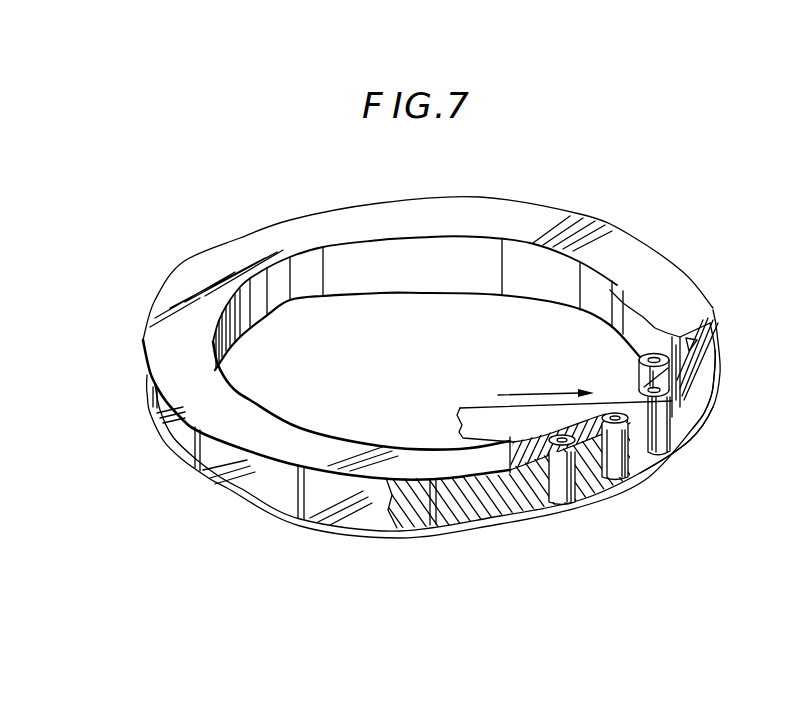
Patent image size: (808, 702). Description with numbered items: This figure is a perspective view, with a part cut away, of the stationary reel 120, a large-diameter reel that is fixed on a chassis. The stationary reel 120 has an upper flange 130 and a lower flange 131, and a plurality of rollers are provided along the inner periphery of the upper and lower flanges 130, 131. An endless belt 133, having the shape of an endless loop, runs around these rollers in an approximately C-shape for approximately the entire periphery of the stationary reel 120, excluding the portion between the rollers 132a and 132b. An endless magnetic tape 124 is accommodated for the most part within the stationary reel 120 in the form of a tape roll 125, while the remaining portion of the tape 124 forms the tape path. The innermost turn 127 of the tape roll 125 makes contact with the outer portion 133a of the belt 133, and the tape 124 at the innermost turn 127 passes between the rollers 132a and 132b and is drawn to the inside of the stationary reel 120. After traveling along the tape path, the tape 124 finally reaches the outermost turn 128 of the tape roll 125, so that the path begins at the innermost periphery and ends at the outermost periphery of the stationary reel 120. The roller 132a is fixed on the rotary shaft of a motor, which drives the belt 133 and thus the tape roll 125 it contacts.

The stationary reel 120 is at (632, 166).
The endless magnetic tape 124 is at (468, 407).
The tape roll 125 is at (350, 512).
The innermost turn 127 is at (715, 423).
The outermost turn 128 is at (707, 407).
The upper flange 130 is at (645, 240).
The lower flange 131 is at (683, 410).
The roller 132a is at (641, 382).
The roller 132b is at (628, 420).
The endless belt 133 is at (543, 497).
The outer portion of the belt 133a is at (700, 332).